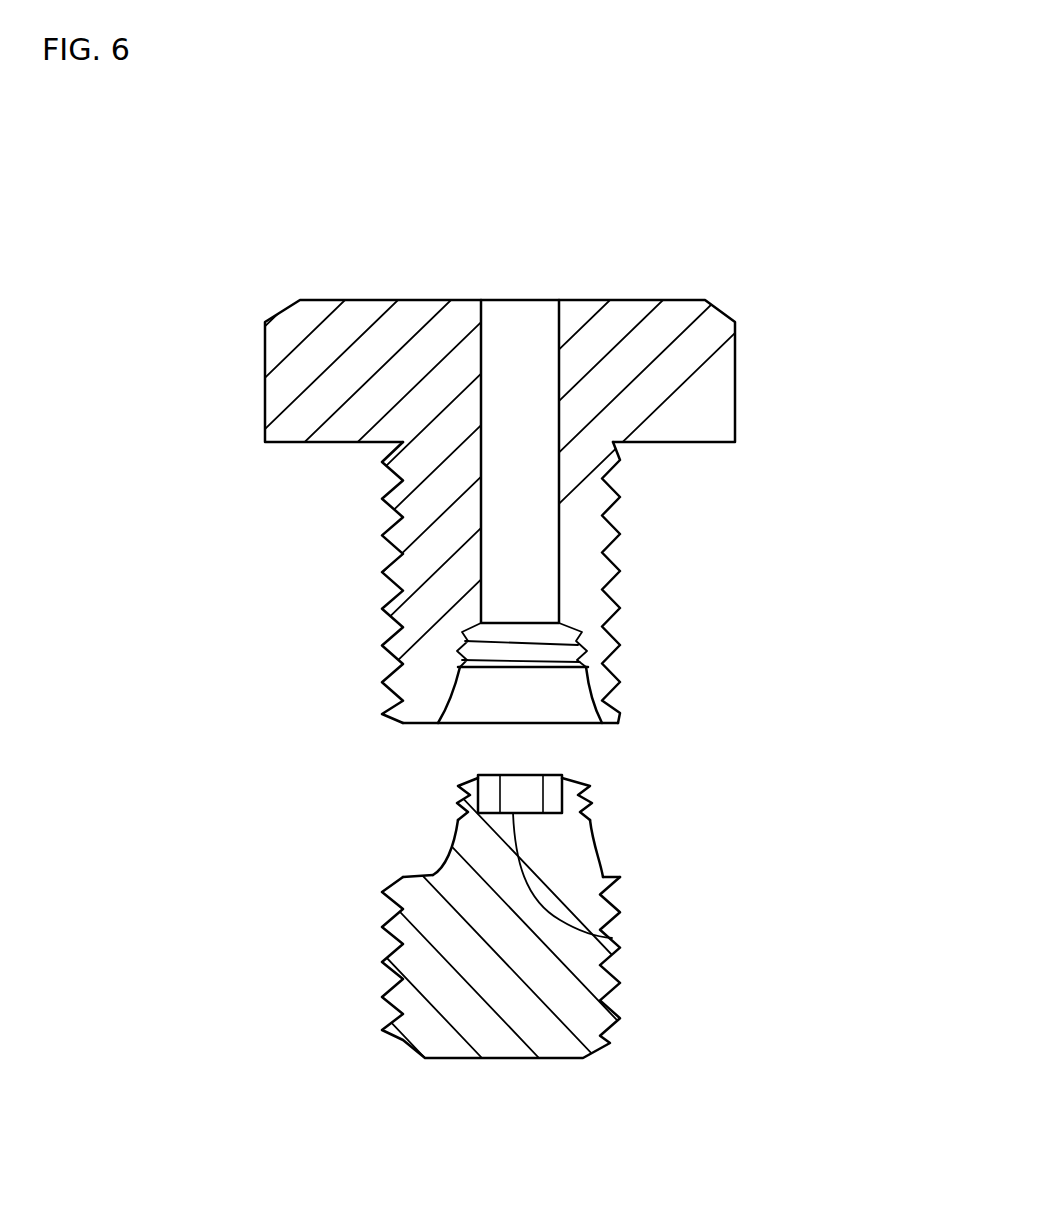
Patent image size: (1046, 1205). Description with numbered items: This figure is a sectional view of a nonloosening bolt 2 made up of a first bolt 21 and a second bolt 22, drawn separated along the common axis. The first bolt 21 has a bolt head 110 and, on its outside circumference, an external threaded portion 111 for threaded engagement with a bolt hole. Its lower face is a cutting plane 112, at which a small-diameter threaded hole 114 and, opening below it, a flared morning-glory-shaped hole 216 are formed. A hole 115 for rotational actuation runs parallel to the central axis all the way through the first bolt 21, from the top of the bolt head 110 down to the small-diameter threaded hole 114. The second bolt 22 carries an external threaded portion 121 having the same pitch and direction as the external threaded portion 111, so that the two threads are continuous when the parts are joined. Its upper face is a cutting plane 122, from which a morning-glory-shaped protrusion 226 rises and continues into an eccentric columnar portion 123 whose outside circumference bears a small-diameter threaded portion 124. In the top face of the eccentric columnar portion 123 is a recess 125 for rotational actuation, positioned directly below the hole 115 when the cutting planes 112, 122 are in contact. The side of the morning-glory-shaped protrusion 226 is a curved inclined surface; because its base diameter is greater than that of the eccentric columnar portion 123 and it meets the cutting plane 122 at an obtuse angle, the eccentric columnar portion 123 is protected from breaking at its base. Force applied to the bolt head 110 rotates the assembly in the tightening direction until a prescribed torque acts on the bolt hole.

The nonloosening bolt 2 is at (389, 250).
The first bolt 21 is at (234, 289).
The second bolt 22 is at (337, 971).
The bolt head 110 is at (265, 390).
The external threaded portion 111 is at (383, 640).
The cutting plane 112 is at (417, 727).
The hole for rotational actuation 115 is at (726, 221).
The small-diameter threaded hole 114 is at (507, 667).
The morning-glory-shaped hole 216 is at (488, 708).
The eccentric columnar portion 123 is at (550, 776).
The small-diameter threaded portion 124 is at (578, 800).
The morning-glory-shaped protrusion 226 is at (598, 848).
The cutting plane 122 is at (427, 874).
The external threaded portion 121 is at (385, 994).
The recess for rotational actuation 125 is at (612, 938).